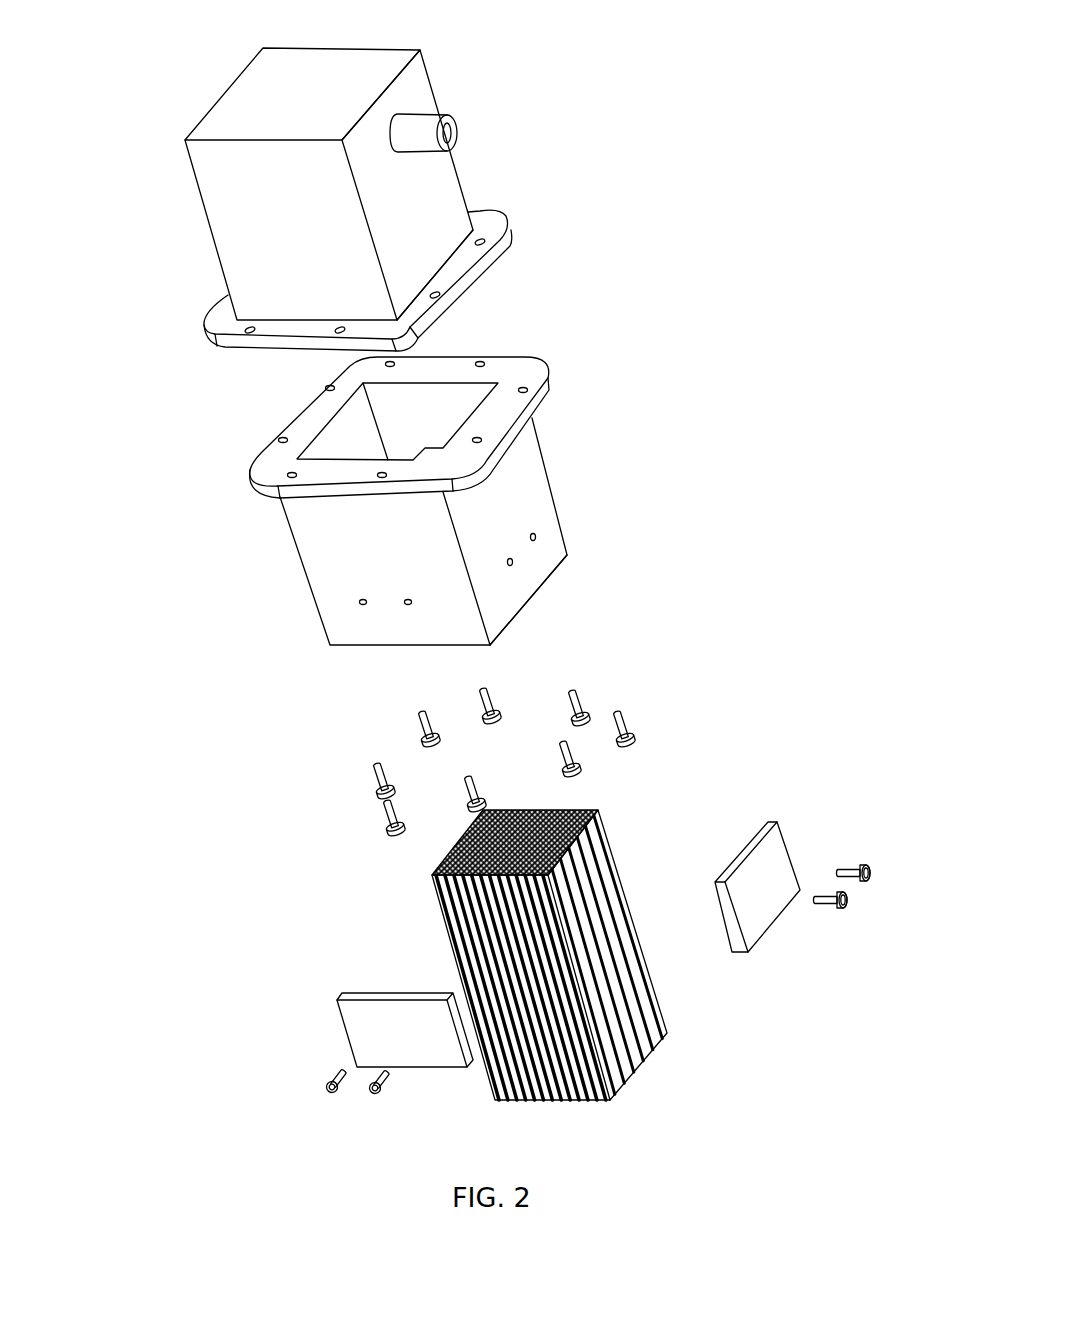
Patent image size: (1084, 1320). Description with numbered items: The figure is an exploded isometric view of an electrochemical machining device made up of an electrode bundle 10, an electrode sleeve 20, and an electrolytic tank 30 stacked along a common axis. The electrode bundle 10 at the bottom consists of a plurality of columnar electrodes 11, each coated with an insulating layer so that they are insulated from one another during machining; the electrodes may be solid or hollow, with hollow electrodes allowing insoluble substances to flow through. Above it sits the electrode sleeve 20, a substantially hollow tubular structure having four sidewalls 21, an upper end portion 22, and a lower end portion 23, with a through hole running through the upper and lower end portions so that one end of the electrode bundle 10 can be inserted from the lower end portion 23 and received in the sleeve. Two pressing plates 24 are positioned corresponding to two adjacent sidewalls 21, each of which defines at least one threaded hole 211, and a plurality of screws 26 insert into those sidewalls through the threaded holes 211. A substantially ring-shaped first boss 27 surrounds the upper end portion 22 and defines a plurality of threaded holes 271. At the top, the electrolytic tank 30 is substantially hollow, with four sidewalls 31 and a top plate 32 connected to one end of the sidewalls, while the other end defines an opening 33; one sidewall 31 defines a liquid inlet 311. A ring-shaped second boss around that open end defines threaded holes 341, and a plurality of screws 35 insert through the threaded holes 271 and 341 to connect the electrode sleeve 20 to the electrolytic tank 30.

The electrode bundle 10 is at (620, 831).
The columnar electrodes 11 is at (637, 1050).
The electrode sleeve 20 is at (298, 558).
The sidewalls 21 is at (527, 478).
The threaded holes 211 is at (512, 565).
The upper end portion 22 is at (335, 440).
The lower end portion 23 is at (525, 607).
The pressing plates 24 is at (355, 1022).
The screws 26 is at (325, 1092).
The first boss 27 is at (503, 400).
The threaded holes 271 is at (292, 476).
The electrolytic tank 30 is at (212, 80).
The sidewalls 31 is at (445, 200).
The liquid inlet 311 is at (418, 125).
The top plate 32 is at (387, 57).
The opening 33 is at (447, 313).
The threaded holes 341 is at (437, 297).
The screws 35 is at (577, 693).